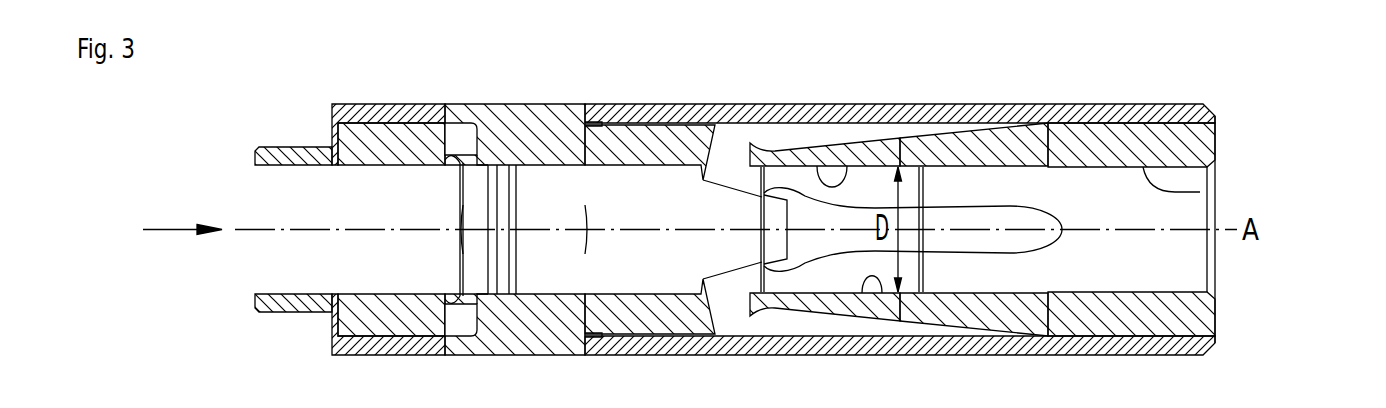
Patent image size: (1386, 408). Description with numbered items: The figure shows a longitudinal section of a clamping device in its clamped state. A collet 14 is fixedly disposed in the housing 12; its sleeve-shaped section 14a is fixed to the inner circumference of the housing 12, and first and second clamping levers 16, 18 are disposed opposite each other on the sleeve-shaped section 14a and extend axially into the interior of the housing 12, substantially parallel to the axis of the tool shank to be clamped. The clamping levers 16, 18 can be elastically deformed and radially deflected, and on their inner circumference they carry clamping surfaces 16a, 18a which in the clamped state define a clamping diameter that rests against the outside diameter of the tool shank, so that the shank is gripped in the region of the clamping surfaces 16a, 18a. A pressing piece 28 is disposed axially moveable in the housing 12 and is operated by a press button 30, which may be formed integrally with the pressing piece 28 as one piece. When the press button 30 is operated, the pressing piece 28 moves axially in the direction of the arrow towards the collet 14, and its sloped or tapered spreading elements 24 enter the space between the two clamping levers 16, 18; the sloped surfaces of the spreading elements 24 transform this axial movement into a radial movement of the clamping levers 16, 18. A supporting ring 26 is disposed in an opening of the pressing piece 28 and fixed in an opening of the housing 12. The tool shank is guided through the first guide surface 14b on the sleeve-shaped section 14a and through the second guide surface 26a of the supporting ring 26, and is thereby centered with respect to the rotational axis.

The housing 12 is at (900, 110).
The collet 14 is at (977, 152).
The sleeve-shaped section 14a is at (1105, 150).
The first guide surface 14b is at (1200, 192).
The first clamping lever 16 is at (790, 157).
The clamping surface 16a is at (847, 160).
The second clamping lever 18 is at (833, 300).
The clamping surface 18a is at (885, 290).
The spreading element 24 is at (722, 215).
The supporting ring 26 is at (558, 137).
The second guide surface 26a is at (545, 184).
The pressing piece 28 is at (387, 147).
The press button 30 is at (303, 155).